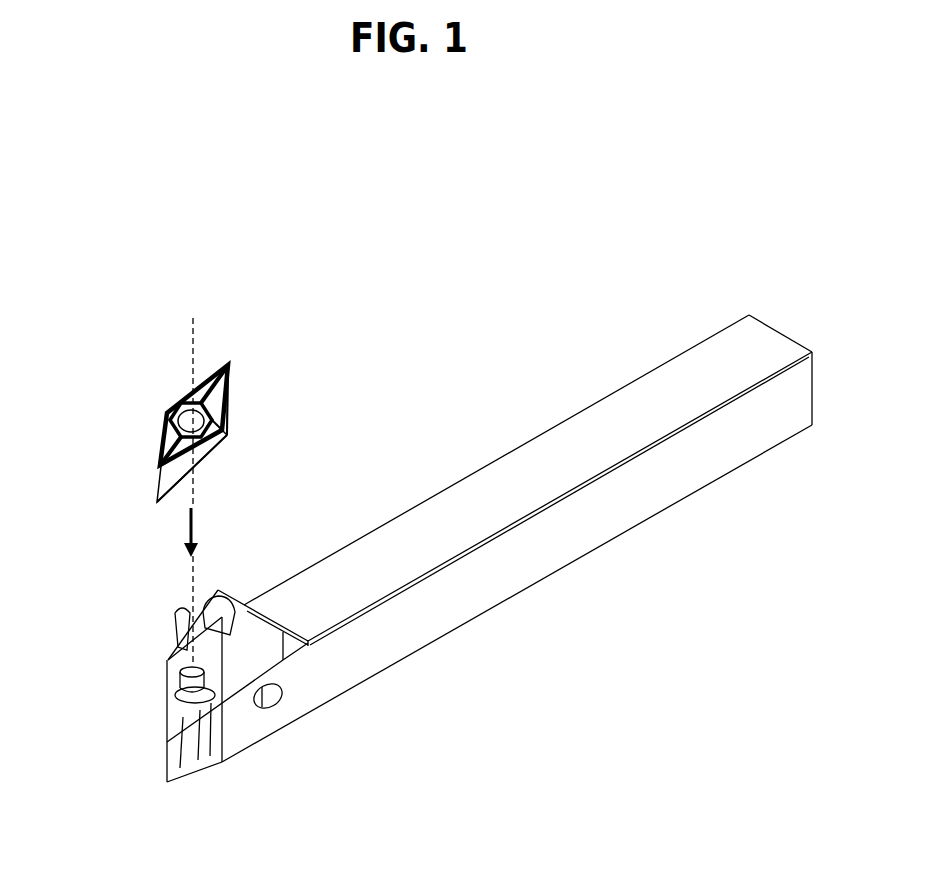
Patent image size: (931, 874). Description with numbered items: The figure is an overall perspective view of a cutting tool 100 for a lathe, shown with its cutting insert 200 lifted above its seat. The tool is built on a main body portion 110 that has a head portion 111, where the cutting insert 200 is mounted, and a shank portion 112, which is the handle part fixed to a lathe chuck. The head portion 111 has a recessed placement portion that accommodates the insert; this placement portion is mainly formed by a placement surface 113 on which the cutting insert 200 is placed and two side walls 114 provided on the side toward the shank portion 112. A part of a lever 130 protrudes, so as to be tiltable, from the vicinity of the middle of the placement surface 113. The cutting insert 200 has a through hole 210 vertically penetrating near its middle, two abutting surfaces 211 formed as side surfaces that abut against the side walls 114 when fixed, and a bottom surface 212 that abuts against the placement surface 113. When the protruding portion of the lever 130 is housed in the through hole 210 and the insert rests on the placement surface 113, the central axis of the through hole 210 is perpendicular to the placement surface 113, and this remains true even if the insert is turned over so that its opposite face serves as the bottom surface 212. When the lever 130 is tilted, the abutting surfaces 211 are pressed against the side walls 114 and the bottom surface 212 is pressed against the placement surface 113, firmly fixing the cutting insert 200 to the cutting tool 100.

The cutting tool 100 is at (120, 573).
The main body portion 110 is at (313, 850).
The head portion 111 is at (325, 745).
The shank portion 112 is at (812, 465).
The placement surface 113 is at (176, 712).
The side walls 114 is at (185, 645).
The lever 130 is at (173, 685).
The cutting insert 200 is at (119, 348).
The through hole 210 is at (181, 398).
The abutting surfaces 211 is at (201, 374).
The bottom surface 212 is at (204, 478).